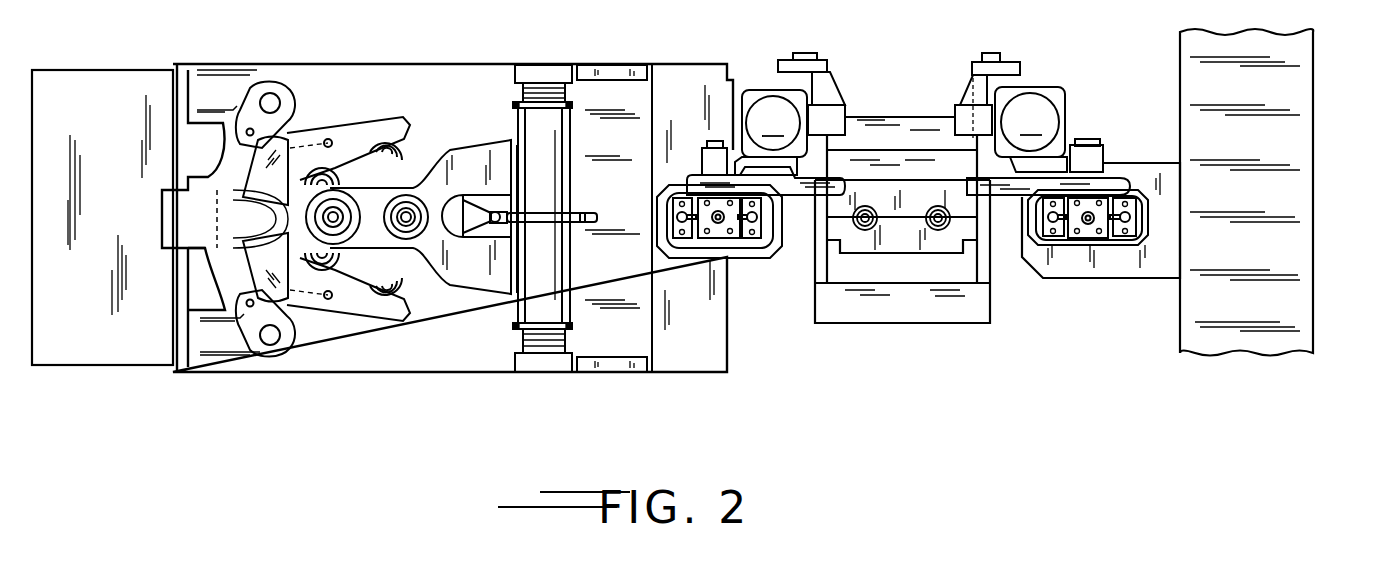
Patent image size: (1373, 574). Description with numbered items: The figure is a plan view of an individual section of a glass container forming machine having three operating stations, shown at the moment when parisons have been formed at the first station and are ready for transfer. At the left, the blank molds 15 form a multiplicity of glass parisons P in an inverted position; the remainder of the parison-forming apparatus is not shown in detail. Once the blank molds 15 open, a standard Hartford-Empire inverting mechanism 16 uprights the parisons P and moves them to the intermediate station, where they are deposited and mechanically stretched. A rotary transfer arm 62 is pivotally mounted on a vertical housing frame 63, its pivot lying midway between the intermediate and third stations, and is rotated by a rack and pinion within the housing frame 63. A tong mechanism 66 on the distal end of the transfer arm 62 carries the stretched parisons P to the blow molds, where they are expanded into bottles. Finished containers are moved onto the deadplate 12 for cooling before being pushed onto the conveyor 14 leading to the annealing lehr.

The deadplate 12 is at (1083, 280).
The conveyor 14 is at (1313, 262).
The blank molds 15 is at (343, 160).
The inverting mechanism 16 is at (586, 210).
The transfer arm 62 is at (752, 192).
The vertical housing frame 63 is at (790, 114).
The tong mechanism 66 is at (733, 240).
The parisons P is at (406, 205).